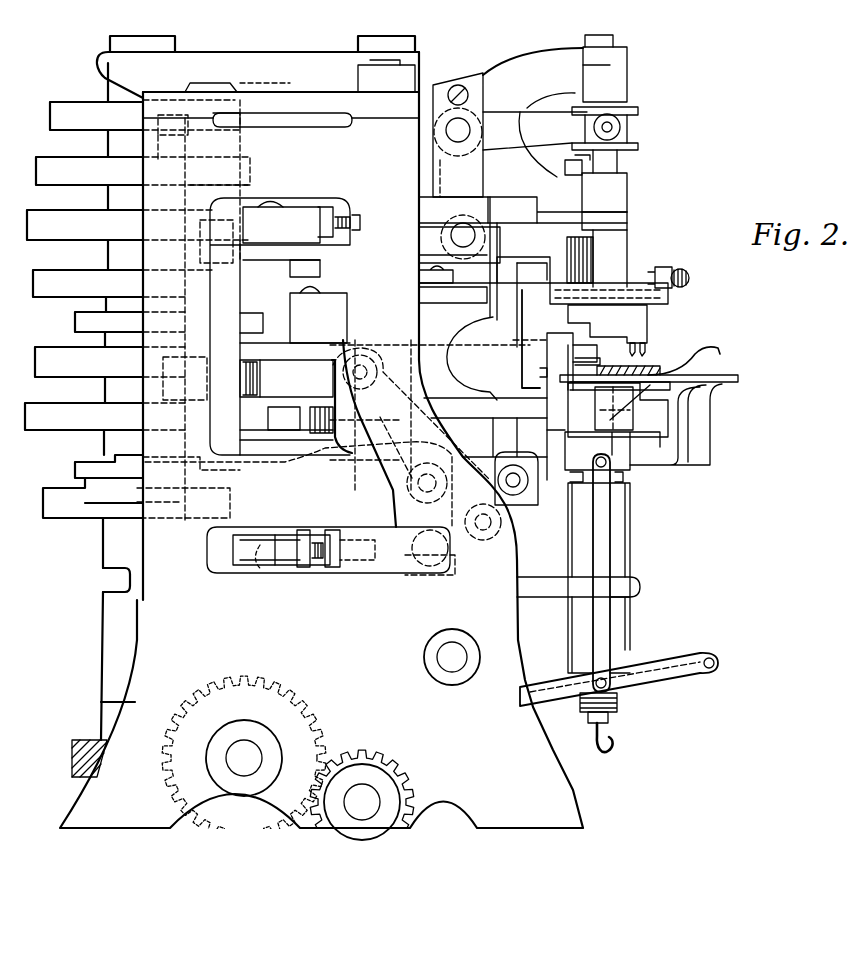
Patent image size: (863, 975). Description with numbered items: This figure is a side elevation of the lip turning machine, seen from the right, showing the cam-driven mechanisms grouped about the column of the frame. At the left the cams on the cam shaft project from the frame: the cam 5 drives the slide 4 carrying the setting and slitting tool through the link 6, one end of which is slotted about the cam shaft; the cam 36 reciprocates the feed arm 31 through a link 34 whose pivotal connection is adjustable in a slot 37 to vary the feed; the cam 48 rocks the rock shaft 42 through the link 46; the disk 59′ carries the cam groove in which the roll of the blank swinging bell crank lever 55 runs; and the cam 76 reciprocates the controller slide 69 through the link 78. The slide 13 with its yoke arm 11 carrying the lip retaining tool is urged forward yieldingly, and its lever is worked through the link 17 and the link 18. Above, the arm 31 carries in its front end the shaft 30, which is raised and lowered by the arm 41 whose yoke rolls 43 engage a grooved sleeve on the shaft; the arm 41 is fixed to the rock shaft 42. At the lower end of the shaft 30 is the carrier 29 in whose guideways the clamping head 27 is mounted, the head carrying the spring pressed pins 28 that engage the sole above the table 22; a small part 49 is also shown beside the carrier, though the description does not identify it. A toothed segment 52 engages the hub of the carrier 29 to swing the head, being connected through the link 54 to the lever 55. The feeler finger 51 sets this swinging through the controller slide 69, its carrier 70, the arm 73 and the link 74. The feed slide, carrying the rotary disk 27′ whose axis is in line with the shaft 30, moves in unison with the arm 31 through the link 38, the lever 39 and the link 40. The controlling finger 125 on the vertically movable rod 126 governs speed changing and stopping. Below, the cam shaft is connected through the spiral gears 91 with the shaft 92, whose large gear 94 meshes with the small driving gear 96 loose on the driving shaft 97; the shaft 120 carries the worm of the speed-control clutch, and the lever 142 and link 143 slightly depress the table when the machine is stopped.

The cam 36 is at (60, 108).
The cam 48 is at (45, 165).
The disk 59′ is at (54, 216).
The cam 5 is at (36, 283).
The link 6 is at (78, 320).
The cam 76 is at (42, 362).
The link 74 is at (78, 470).
The link 46 is at (305, 212).
The bell crank lever 55 is at (264, 252).
The link 54 is at (290, 272).
The slide 4 is at (406, 384).
The link 78 is at (286, 378).
The carrier 70 is at (258, 405).
The controller slide 69 is at (295, 445).
The arm 73 is at (312, 455).
The link 18 is at (345, 562).
The rock shaft 42 is at (462, 137).
The arm 41 is at (512, 122).
The arm 31 is at (628, 70).
The rolls 43 is at (640, 127).
The shaft 30 is at (618, 163).
The vertically movable rod 126 is at (578, 168).
The link 34 is at (500, 215).
The slot 37 is at (520, 215).
The carrier 29 is at (627, 253).
The knurled screw 49 is at (680, 268).
The segment 52 is at (535, 265).
The link 38 is at (470, 257).
The lever 39 is at (446, 308).
The arm 11 is at (557, 357).
The clamping head 27 is at (651, 320).
The feeler finger 51 is at (578, 362).
The spring pressed pins 28 is at (650, 350).
The rotary disk 27′ is at (575, 378).
The sole supporting table 22 is at (740, 378).
The controlling finger 125 is at (727, 350).
The link 40 is at (700, 410).
The slide 13 is at (552, 443).
The link 17 is at (512, 508).
The link 143 is at (605, 560).
The lever 142 is at (657, 683).
The shaft 120 is at (455, 655).
The spiral gears 91 is at (85, 740).
The gear 94 is at (303, 710).
The shaft 92 is at (236, 756).
The driving gear 96 is at (378, 748).
The driving shaft 97 is at (366, 800).